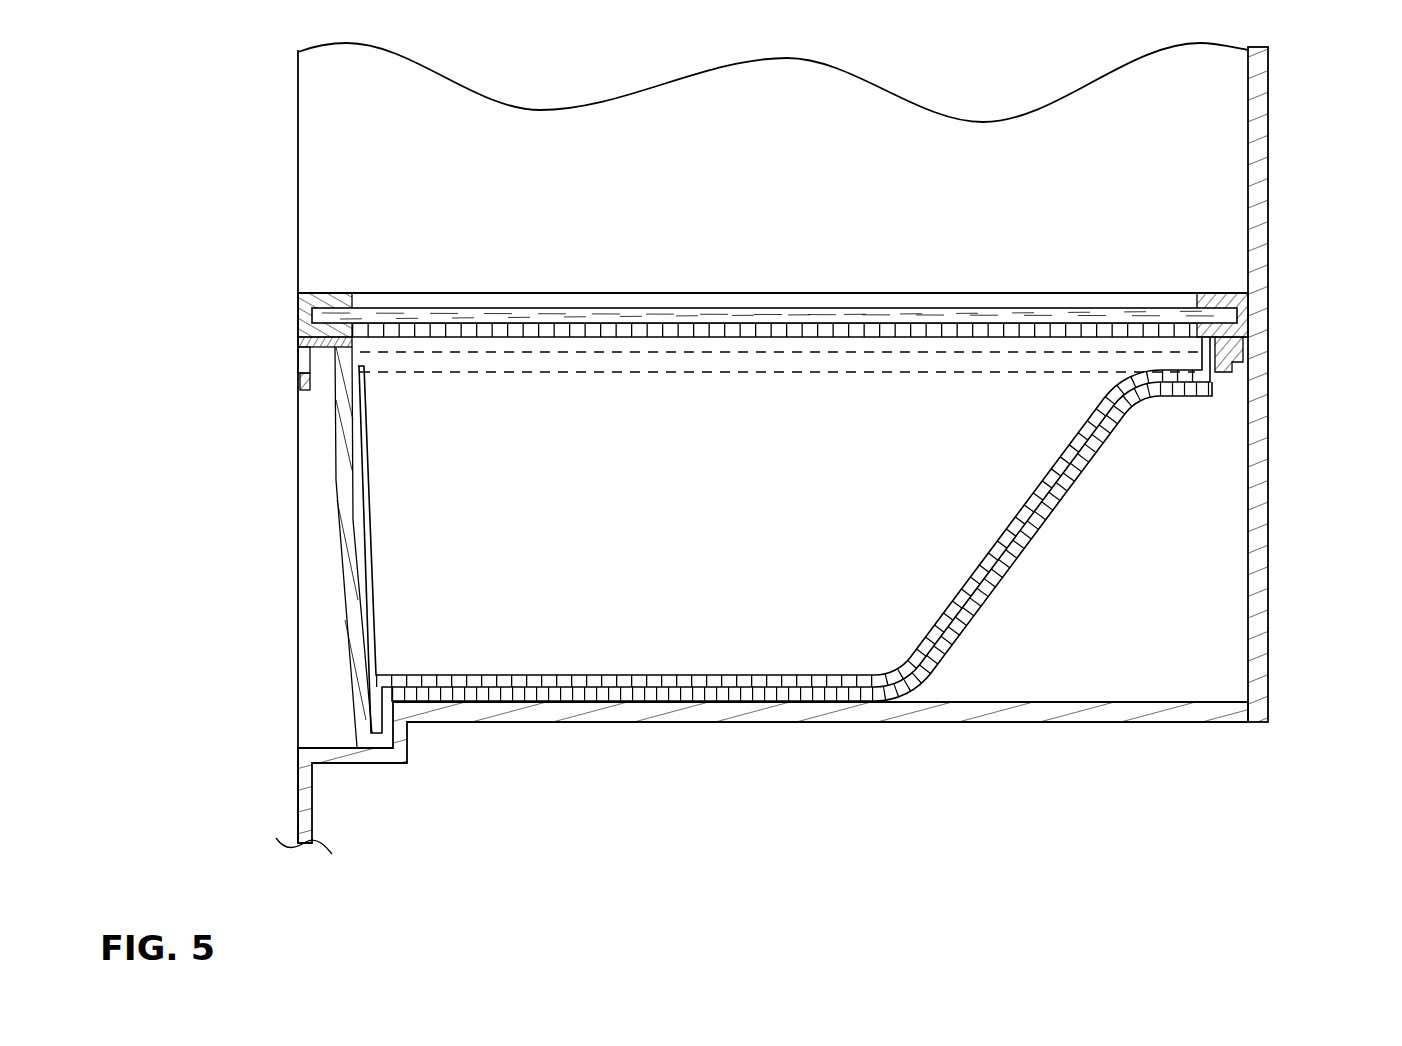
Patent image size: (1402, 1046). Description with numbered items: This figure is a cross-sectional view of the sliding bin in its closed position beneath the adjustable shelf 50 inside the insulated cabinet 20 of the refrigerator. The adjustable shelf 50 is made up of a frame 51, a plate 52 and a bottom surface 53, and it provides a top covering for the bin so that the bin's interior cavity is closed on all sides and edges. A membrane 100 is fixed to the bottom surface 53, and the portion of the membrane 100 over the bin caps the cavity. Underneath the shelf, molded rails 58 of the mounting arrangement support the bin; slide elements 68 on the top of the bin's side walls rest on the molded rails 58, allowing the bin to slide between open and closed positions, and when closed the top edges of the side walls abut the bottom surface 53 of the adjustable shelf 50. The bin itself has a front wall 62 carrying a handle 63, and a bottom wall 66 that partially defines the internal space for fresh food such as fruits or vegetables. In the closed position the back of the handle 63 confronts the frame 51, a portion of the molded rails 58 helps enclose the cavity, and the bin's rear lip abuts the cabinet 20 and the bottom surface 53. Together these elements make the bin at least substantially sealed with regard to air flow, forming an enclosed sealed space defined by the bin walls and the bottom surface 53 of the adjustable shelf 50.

The insulated cabinet 20 is at (1268, 560).
The adjustable shelf 50 is at (362, 266).
The frame 51 is at (327, 295).
The plate 52 is at (455, 305).
The bottom surface 53 is at (1135, 323).
The molded rails 58 is at (465, 375).
The front wall 62 is at (345, 520).
The handle 63 is at (300, 348).
The bottom wall 66 is at (663, 695).
The slide elements 68 is at (435, 340).
The membrane 100 is at (703, 332).